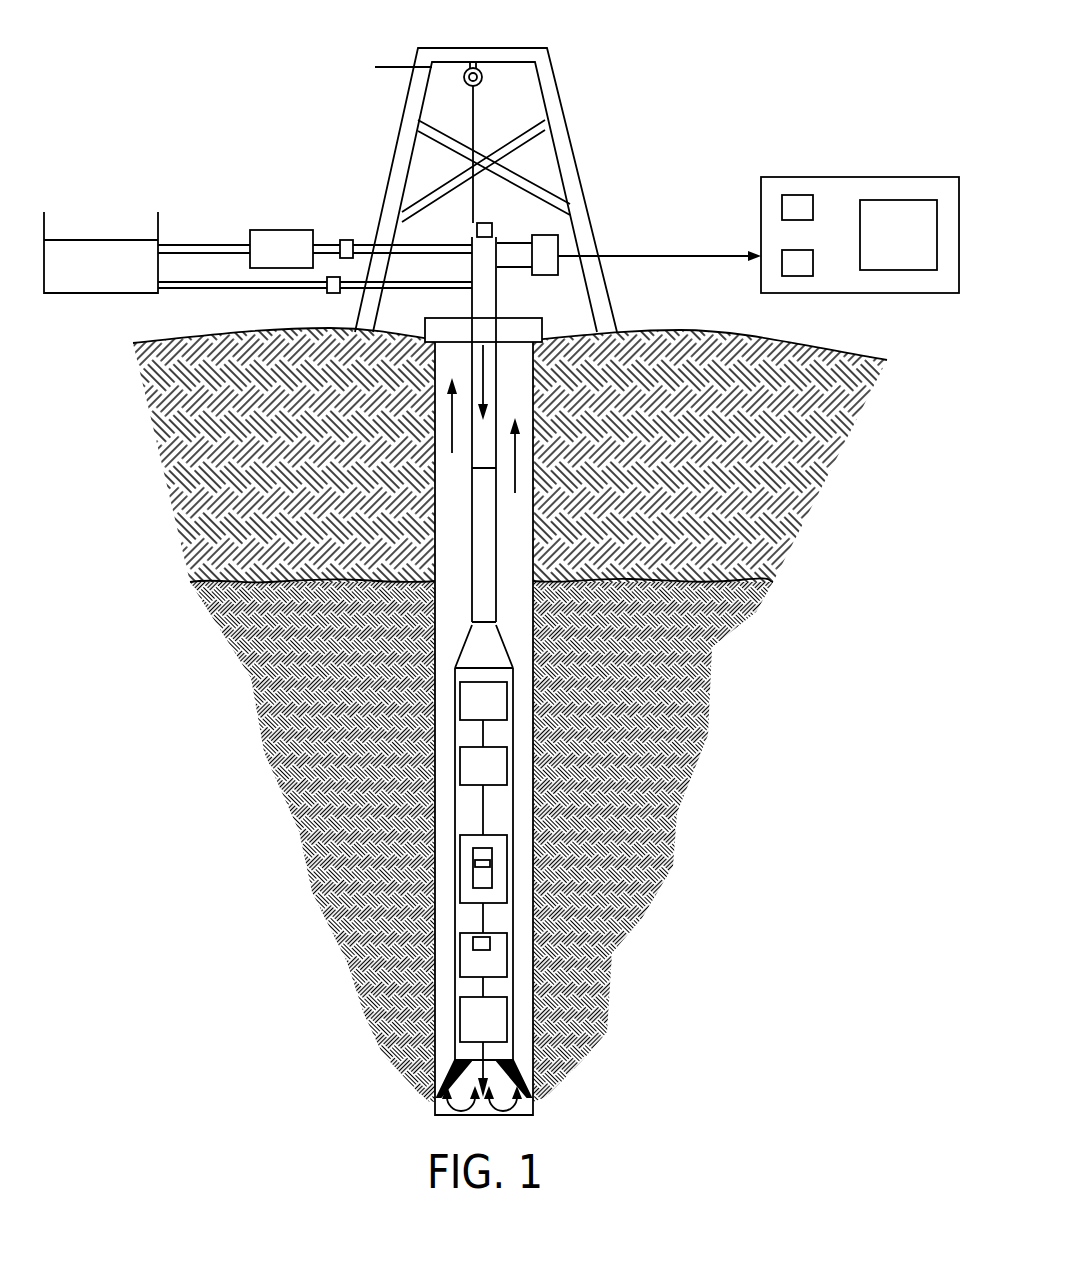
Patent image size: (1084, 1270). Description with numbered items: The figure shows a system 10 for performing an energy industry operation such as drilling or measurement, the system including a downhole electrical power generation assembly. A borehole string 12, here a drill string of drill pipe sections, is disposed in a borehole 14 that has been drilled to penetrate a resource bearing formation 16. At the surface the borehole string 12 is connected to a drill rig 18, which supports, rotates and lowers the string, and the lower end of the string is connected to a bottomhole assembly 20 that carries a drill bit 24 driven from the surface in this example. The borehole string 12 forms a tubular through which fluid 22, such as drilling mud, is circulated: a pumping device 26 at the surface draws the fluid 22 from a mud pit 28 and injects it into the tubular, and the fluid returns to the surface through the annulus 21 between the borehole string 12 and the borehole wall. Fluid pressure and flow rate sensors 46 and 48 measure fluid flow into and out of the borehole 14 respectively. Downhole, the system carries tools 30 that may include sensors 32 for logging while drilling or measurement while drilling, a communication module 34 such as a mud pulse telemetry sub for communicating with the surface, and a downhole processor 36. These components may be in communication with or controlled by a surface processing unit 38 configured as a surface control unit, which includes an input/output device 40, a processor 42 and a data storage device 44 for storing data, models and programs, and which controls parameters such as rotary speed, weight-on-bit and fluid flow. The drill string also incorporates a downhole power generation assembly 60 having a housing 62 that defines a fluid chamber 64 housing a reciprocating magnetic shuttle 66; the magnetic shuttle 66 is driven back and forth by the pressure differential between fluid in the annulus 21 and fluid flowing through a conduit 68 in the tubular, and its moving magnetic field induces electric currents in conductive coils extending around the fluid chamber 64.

The system 10 is at (661, 96).
The borehole string 12 is at (470, 482).
The borehole 14 is at (433, 398).
The resource bearing formation 16 is at (712, 634).
The drill rig 18 is at (380, 136).
The bottomhole assembly 20 is at (463, 658).
The annulus 21 is at (523, 695).
The fluid 22 is at (515, 468).
The drill bit 24 is at (537, 1073).
The pumping device 26 is at (283, 230).
The mud pit 28 is at (95, 270).
The downhole tools 30 is at (462, 1018).
The sensors 32 is at (490, 940).
The communication module 34 is at (460, 765).
The downhole processor 36 is at (460, 700).
The surface processing unit 38 is at (913, 177).
The input/output device 40 is at (798, 262).
The processor 42 is at (797, 207).
The data storage device 44 is at (916, 255).
The fluid pressure and/or flow rate sensor 46 is at (346, 240).
The fluid pressure and/or flow rate sensor 48 is at (330, 291).
The downhole power generation assembly 60 is at (248, 855).
The housing 62 is at (503, 893).
The fluid chamber 64 is at (475, 877).
The magnetic shuttle 66 is at (485, 858).
The conduit 68 is at (475, 805).